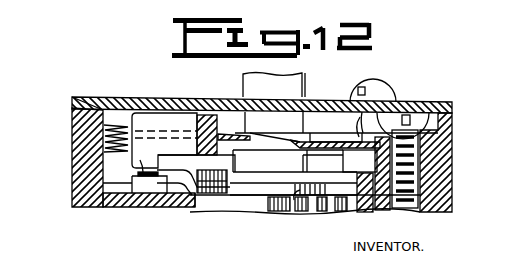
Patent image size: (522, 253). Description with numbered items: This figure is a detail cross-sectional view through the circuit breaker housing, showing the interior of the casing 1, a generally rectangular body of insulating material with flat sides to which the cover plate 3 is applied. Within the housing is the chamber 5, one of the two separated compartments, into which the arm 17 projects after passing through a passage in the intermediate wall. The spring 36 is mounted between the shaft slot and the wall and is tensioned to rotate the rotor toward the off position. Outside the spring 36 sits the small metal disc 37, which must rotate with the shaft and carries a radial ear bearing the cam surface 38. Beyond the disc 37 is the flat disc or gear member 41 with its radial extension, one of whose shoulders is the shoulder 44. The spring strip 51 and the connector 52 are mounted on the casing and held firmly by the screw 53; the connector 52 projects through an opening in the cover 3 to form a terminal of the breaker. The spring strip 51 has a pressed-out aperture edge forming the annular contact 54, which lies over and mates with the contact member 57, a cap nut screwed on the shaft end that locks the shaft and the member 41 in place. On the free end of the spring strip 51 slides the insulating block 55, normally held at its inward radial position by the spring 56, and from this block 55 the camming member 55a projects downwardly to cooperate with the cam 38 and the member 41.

The casing 1 is at (80, 204).
The cover plate 3 is at (146, 98).
The chamber 5 is at (72, 172).
The arm 17 is at (363, 213).
The spring 36 is at (215, 213).
The disc 37 is at (288, 212).
The cam surface 38 is at (145, 196).
The disc or gear member 41 is at (200, 203).
The shoulder 44 is at (348, 173).
The spring strip 51 is at (381, 91).
The connector 52 is at (243, 80).
The screw 53 is at (434, 102).
The annular contact 54 is at (325, 101).
The block 55 is at (161, 113).
The camming member 55a is at (130, 178).
The spring 56 is at (105, 97).
The contact member 57 is at (335, 152).